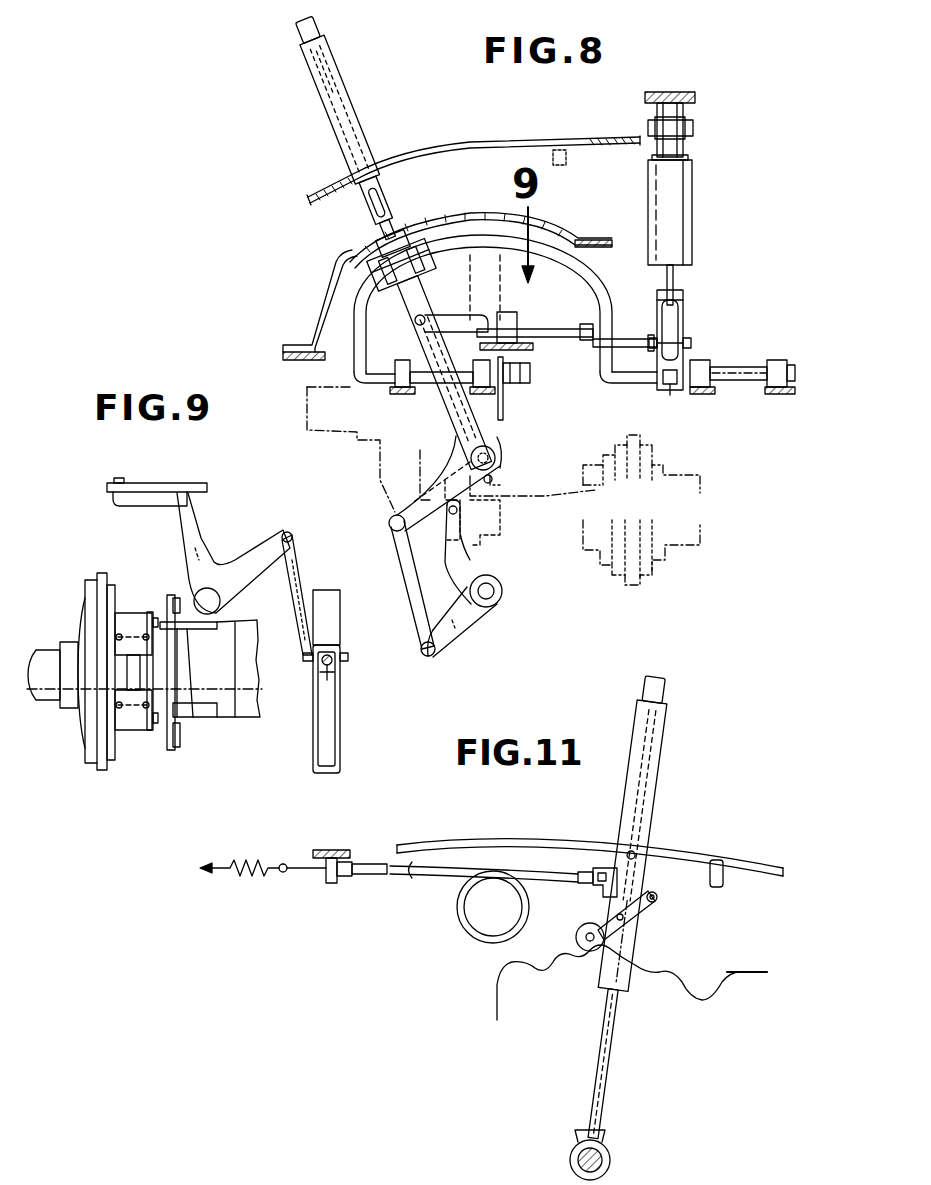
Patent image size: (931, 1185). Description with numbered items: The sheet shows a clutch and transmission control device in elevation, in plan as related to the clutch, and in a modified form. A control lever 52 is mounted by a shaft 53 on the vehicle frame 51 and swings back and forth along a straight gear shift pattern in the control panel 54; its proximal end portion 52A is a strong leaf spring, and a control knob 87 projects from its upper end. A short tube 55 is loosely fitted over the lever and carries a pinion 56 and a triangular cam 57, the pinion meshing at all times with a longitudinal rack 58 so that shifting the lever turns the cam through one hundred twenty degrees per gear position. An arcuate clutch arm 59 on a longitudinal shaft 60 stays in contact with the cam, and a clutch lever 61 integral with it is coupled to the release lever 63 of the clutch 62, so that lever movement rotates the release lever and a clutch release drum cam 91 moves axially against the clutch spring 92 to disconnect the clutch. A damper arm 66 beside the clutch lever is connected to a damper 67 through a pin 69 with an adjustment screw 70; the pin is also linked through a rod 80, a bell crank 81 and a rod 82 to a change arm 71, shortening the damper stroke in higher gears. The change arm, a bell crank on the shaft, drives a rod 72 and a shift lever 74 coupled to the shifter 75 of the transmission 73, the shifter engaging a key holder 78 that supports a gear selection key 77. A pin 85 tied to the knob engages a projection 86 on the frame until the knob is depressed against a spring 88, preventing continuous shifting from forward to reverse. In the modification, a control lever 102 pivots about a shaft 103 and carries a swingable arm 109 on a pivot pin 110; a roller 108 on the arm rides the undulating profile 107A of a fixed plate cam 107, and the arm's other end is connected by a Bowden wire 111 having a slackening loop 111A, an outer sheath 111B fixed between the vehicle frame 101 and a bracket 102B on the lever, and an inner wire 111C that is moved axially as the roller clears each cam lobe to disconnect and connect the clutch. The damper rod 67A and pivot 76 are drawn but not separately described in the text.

In FIG. 8, the vehicle frame 51 is at (690, 108).
In FIG. 8, the control lever 52 is at (355, 118).
In FIG. 8, the proximal end portion 52A is at (444, 483).
In FIG. 8, the shaft 53 is at (496, 452).
In FIG. 8, the control panel 54 is at (475, 141).
In FIG. 8, the short tube 55 is at (385, 224).
In FIG. 8, the pinion 56 is at (417, 228).
In FIG. 8, the triangular cam 57 is at (352, 253).
In FIG. 8, the rack 58 is at (474, 212).
In FIG. 8, the clutch arm 59 is at (497, 252).
In FIG. 8, the longitudinal shaft 60 is at (418, 392).
In FIG. 8, the clutch lever 61 is at (505, 407).
In FIG. 8, the clutch 62 is at (375, 490).
In FIG. 9, the clutch 62 is at (76, 742).
In FIG. 9, the release lever 63 is at (180, 748).
In FIG. 8, the damper arm 66 is at (684, 307).
In FIG. 9, the damper arm 66 is at (340, 625).
In FIG. 8, the damper 67 is at (692, 200).
In FIG. 8, the damper rod 67A is at (675, 287).
In FIG. 9, the damper rod 67A is at (333, 678).
In FIG. 8, the pin 69 is at (692, 347).
In FIG. 9, the pin 69 is at (349, 658).
In FIG. 8, the adjustment screw 70 is at (670, 393).
In FIG. 8, the change arm 71 is at (458, 422).
In FIG. 9, the change arm 71 is at (165, 481).
In FIG. 8, the rod 72 is at (405, 582).
In FIG. 8, the transmission 73 is at (628, 588).
In FIG. 8, the shift lever 74 is at (462, 630).
In FIG. 8, the shifter 75 is at (462, 565).
In FIG. 8, the pivot 76 is at (499, 602).
In FIG. 8, the transmission gear selection key 77 is at (540, 485).
In FIG. 8, the key holder 78 is at (503, 512).
In FIG. 8, the rod 80 is at (452, 318).
In FIG. 9, the rod 80 is at (137, 507).
In FIG. 8, the bell crank 81 is at (550, 328).
In FIG. 9, the bell crank 81 is at (200, 540).
In FIG. 8, the rod 82 is at (618, 338).
In FIG. 9, the rod 82 is at (300, 572).
In FIG. 8, the pin 85 is at (376, 182).
In FIG. 8, the projection 86 is at (566, 160).
In FIG. 8, the control knob 87 is at (303, 24).
In FIG. 8, the spring 88 is at (345, 74).
In FIG. 9, the clutch release drum cam 91 is at (152, 732).
In FIG. 9, the clutch spring 92 is at (128, 630).
In FIG. 11, the vehicle frame 101 is at (334, 850).
In FIG. 11, the control lever 102 is at (612, 940).
In FIG. 11, the bracket 102B is at (600, 865).
In FIG. 11, the shaft 103 is at (606, 1162).
In FIG. 11, the plate cam 107 is at (692, 985).
In FIG. 11, the undulating profile 107A is at (737, 973).
In FIG. 11, the roller 108 is at (576, 939).
In FIG. 11, the swingable arm 109 is at (648, 908).
In FIG. 11, the pivot pin 110 is at (615, 917).
In FIG. 11, the Bowden wire 111 is at (399, 885).
In FIG. 11, the slackening loop 111A is at (466, 930).
In FIG. 11, the outer sheath 111B is at (548, 866).
In FIG. 11, the inner wire 111C is at (305, 873).